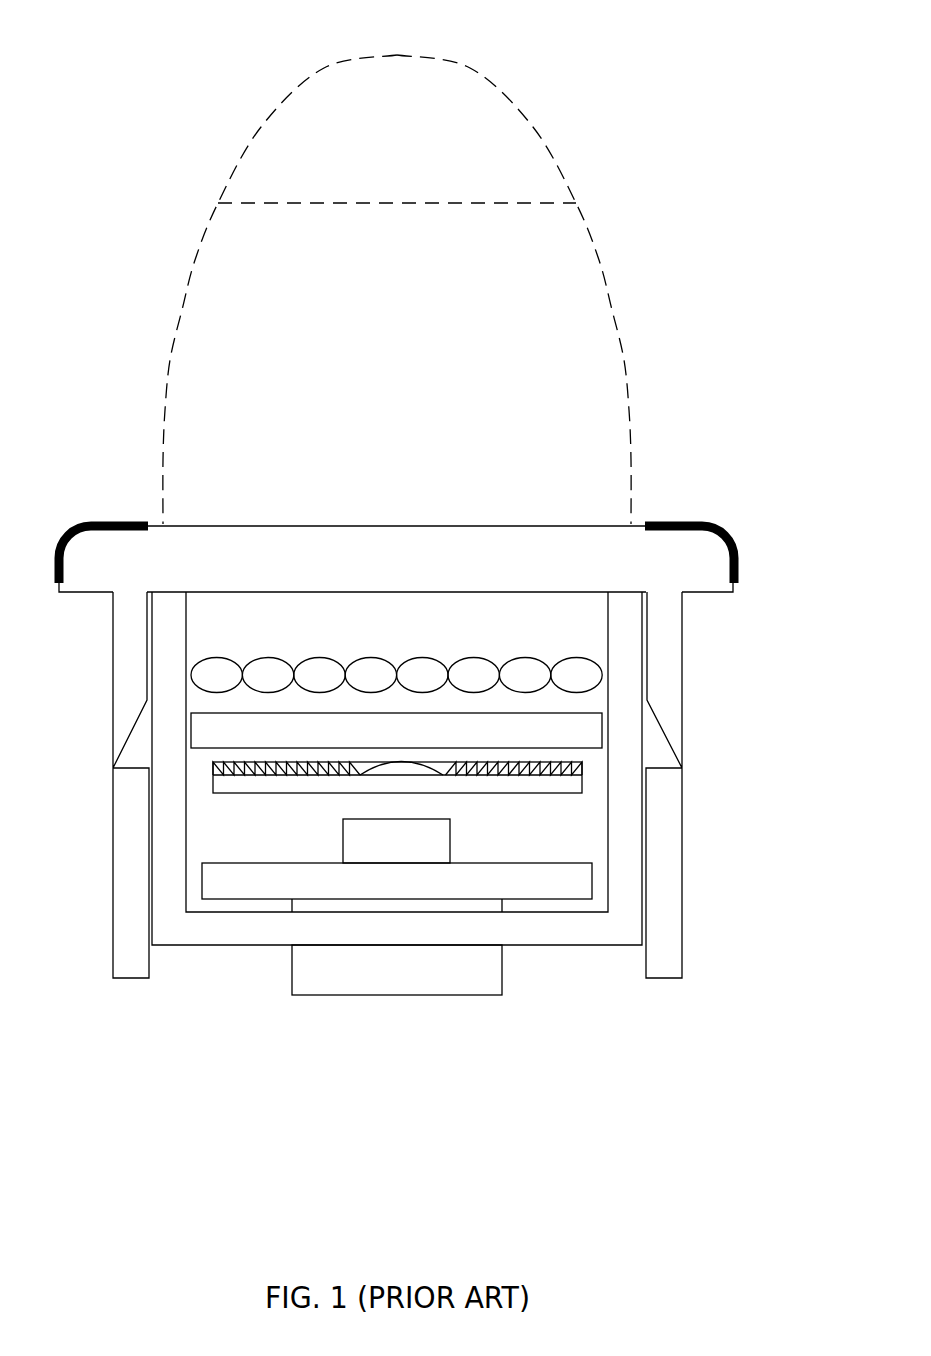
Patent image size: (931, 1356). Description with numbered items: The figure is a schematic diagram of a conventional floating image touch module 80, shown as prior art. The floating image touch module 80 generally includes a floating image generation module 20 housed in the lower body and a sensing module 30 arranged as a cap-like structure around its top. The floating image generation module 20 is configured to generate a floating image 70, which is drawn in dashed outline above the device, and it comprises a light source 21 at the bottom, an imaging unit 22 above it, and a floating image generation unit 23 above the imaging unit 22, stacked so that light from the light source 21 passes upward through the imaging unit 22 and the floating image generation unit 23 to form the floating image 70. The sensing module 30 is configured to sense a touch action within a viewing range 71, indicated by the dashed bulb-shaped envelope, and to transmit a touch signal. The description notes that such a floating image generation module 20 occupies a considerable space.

The floating image touch module 80 is at (173, 27).
The floating image 70 is at (513, 202).
The viewing range 71 is at (603, 280).
The sensing module 30 is at (661, 552).
The floating image generation module 20 is at (503, 785).
The light source 21 is at (435, 840).
The imaging unit 22 is at (597, 737).
The floating image generation unit 23 is at (600, 675).